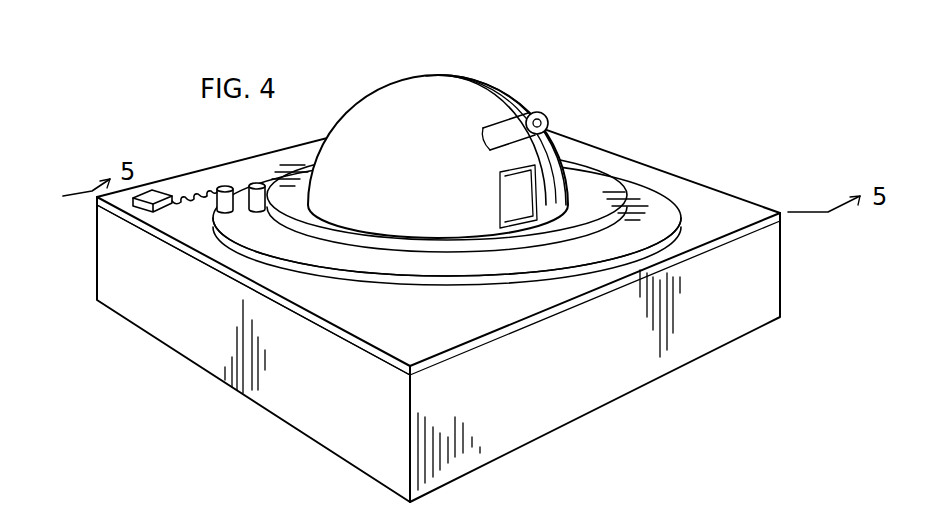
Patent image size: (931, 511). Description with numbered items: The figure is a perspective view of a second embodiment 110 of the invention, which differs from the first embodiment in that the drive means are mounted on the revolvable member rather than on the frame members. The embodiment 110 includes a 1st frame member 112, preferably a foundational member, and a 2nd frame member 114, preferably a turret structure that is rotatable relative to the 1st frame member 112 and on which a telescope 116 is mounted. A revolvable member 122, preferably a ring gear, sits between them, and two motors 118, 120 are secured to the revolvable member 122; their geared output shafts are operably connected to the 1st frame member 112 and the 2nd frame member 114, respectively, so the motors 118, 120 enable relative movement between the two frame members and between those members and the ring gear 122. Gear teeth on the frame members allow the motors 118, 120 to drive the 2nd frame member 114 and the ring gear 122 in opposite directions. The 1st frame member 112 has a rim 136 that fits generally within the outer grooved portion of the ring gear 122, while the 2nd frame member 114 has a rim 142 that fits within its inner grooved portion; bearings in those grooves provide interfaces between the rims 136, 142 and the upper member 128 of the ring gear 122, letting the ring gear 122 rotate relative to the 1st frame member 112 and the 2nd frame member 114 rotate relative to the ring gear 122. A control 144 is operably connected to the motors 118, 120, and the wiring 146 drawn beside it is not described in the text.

The second embodiment 110 is at (680, 155).
The 1st frame member 112 is at (700, 197).
The 2nd frame member 114 is at (353, 127).
The telescope 116 is at (549, 118).
The motor 118 is at (222, 186).
The motor 120 is at (257, 183).
The revolvable member 122 is at (477, 283).
The upper member 128 is at (317, 253).
The rim 136 is at (198, 235).
The rim 142 is at (310, 227).
The control 144 is at (140, 212).
The coil wire 146 is at (183, 198).